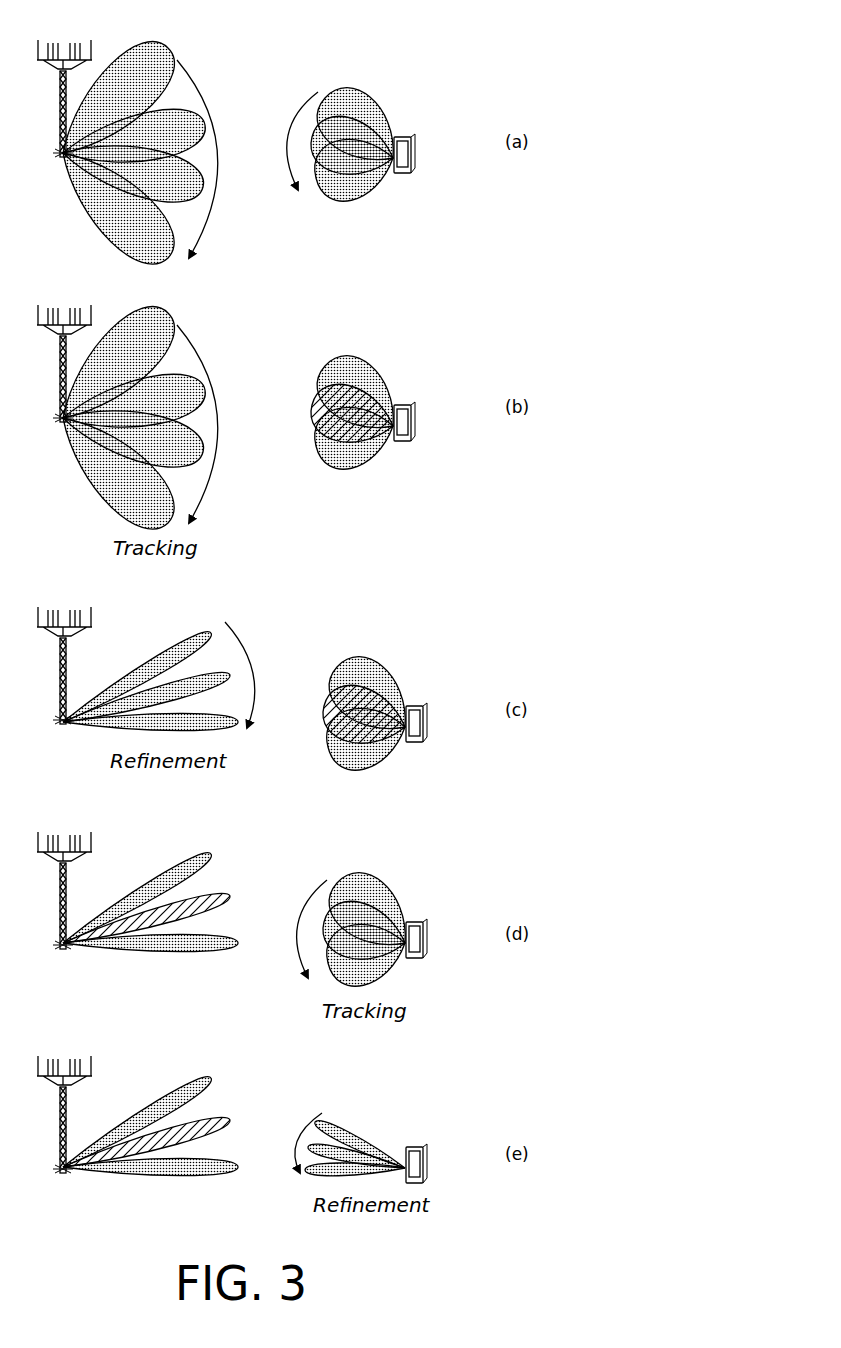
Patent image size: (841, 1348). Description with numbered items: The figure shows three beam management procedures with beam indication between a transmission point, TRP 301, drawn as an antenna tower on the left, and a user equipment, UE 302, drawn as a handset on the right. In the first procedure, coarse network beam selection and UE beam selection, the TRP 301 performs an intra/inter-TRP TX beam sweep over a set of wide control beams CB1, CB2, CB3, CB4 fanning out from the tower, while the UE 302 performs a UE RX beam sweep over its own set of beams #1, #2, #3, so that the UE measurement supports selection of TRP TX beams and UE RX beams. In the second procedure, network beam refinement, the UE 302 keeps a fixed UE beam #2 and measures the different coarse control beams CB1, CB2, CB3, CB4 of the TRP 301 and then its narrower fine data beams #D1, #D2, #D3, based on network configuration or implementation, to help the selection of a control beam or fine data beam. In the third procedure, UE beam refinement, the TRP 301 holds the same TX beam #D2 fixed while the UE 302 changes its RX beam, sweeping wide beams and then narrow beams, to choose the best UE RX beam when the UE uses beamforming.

The TRP 301 is at (67, 46).
The UE 302 is at (406, 137).
The control beam CB1 is at (118, 230).
The control beam CB2 is at (134, 268).
The control beam CB3 is at (133, 306).
The control beam CB4 is at (118, 341).
The UE RX beam 1 is at (361, 516).
The UE RX beam 2 is at (358, 537).
The UE RX beam 3 is at (360, 562).
The fine data beam D1 is at (138, 896).
The fine data beam D2 is at (146, 915).
The fine data beam D3 is at (150, 943).